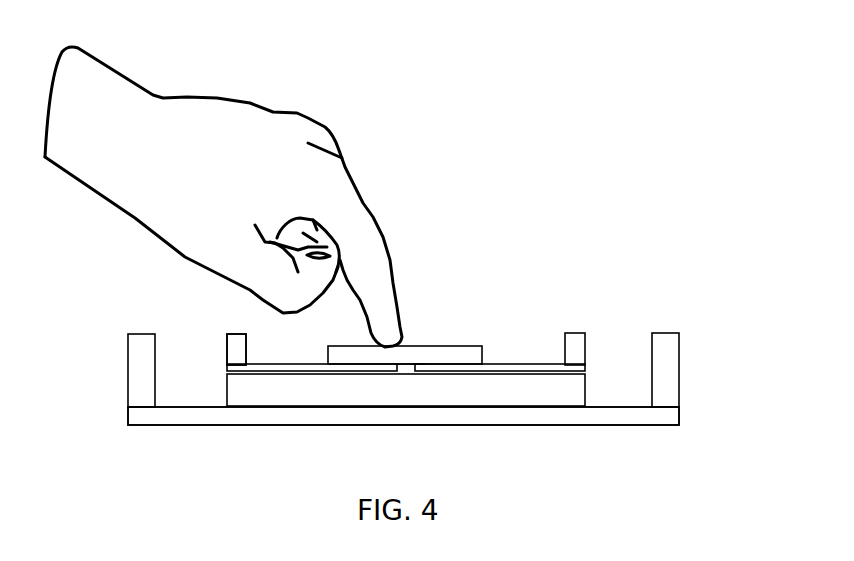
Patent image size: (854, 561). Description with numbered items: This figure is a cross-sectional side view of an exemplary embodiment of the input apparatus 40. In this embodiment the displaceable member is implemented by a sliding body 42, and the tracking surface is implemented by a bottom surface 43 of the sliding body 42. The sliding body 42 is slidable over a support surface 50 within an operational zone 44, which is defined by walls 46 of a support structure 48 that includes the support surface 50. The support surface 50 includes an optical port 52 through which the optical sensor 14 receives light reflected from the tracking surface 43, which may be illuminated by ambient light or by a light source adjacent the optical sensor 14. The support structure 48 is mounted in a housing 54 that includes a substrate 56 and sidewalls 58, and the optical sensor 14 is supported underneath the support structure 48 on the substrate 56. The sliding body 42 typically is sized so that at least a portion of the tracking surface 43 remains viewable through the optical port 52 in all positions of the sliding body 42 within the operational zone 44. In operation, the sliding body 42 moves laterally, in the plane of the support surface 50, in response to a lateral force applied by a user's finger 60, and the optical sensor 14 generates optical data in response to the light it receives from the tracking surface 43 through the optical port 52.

The optical sensor 14 is at (227, 390).
The input apparatus 40 is at (652, 174).
The sliding body 42 is at (442, 345).
The bottom surface 43 is at (480, 367).
The operational zone 44 is at (265, 329).
The walls 46 is at (576, 332).
The support structure 48 is at (201, 325).
The support surface 50 is at (500, 365).
The optical port 52 is at (388, 361).
The housing 54 is at (96, 358).
The substrate 56 is at (128, 418).
The sidewalls 58 is at (680, 369).
The user's finger 60 is at (389, 238).